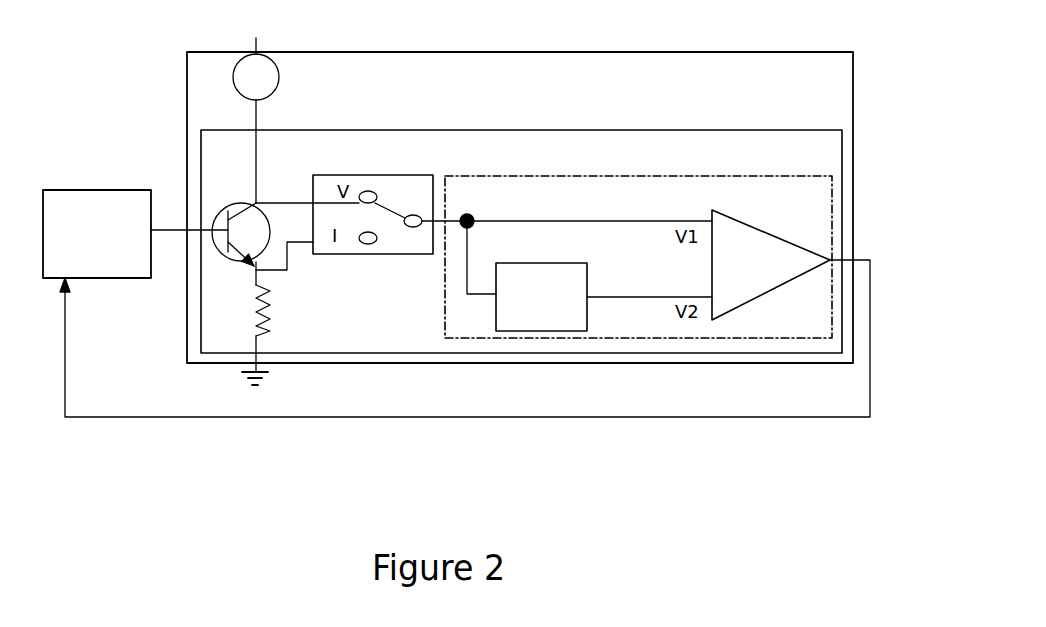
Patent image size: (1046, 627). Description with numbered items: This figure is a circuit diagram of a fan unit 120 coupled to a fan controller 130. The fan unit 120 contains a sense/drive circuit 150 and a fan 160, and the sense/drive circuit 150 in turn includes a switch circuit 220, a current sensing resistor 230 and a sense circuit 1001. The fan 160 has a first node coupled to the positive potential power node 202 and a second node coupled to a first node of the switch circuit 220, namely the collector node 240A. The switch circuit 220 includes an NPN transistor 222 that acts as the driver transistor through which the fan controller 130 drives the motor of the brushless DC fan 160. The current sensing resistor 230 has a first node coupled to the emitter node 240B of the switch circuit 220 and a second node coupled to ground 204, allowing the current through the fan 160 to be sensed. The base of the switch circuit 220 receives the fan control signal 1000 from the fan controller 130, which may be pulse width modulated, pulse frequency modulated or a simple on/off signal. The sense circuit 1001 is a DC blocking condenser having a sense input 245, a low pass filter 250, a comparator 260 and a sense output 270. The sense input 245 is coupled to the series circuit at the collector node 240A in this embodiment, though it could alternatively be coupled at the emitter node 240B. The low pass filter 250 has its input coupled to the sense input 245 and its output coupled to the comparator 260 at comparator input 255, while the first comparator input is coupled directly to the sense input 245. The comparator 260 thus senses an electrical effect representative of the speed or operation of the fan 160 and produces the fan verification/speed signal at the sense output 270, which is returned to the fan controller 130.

The fan unit 120 is at (520, 186).
The sense/drive circuit 150 is at (521, 209).
The power node 202 is at (235, 34).
The fan 160 is at (301, 115).
The fan controller 130 is at (97, 234).
The fan control signal 1000 is at (157, 188).
The switch circuit 220 is at (210, 268).
The NPN transistor 222 is at (293, 180).
The current sensing resistor 230 is at (303, 328).
The ground 204 is at (285, 389).
The collector node 240A is at (399, 175).
The emitter node 240B is at (392, 260).
The sense input 245 is at (586, 222).
The sense circuit 1001 is at (638, 286).
The low pass filter 250 is at (541, 297).
The comparator input 255 is at (649, 279).
The comparator 260 is at (745, 251).
The sense output 270 is at (498, 316).